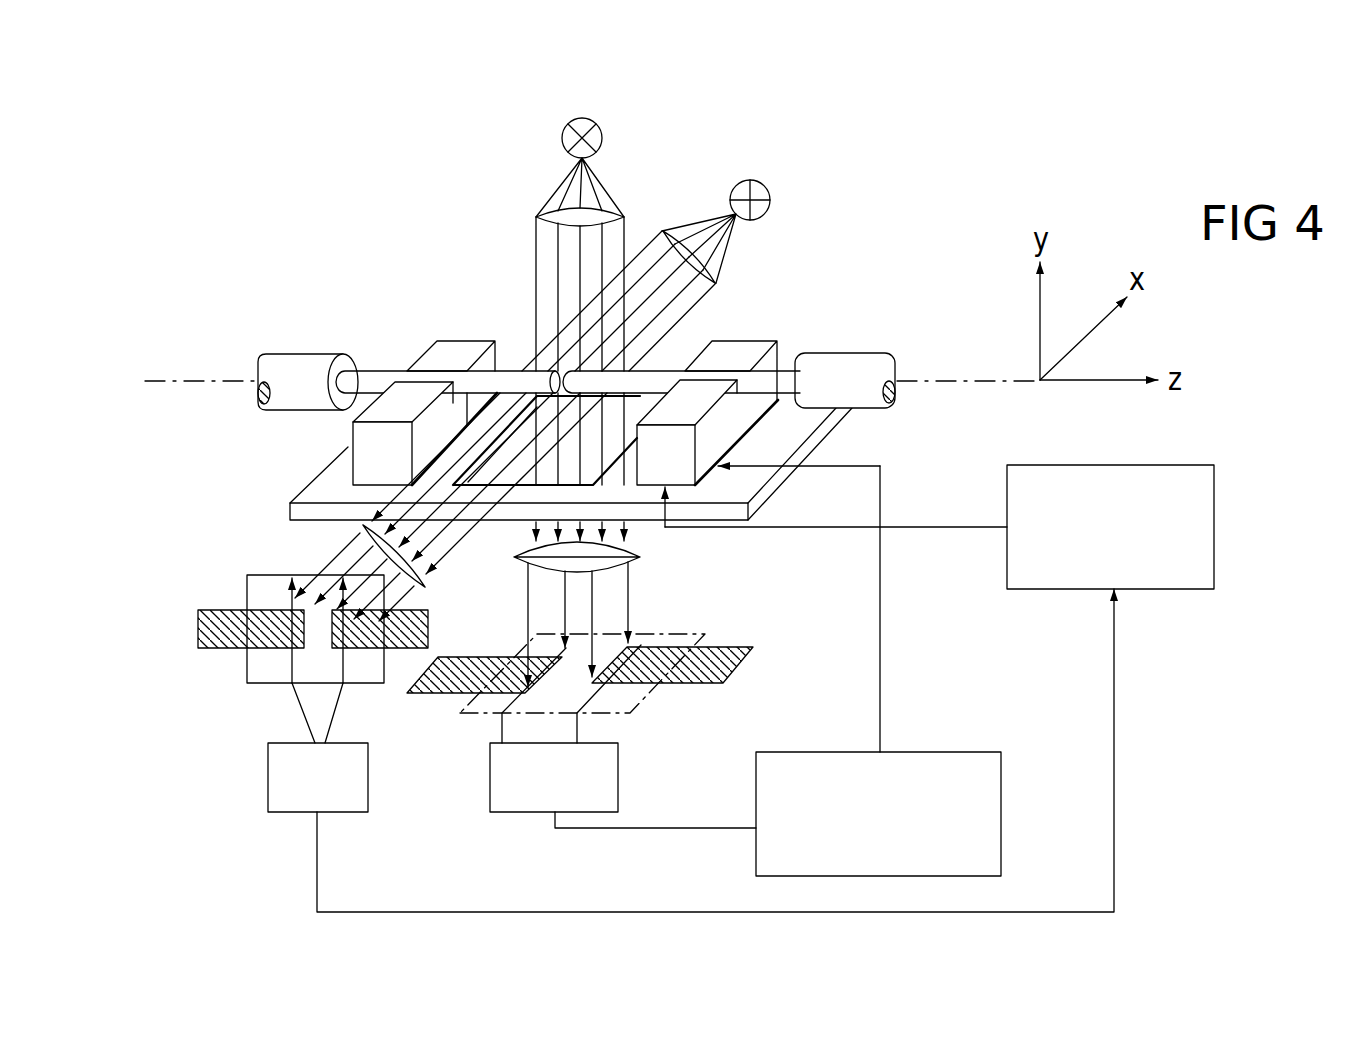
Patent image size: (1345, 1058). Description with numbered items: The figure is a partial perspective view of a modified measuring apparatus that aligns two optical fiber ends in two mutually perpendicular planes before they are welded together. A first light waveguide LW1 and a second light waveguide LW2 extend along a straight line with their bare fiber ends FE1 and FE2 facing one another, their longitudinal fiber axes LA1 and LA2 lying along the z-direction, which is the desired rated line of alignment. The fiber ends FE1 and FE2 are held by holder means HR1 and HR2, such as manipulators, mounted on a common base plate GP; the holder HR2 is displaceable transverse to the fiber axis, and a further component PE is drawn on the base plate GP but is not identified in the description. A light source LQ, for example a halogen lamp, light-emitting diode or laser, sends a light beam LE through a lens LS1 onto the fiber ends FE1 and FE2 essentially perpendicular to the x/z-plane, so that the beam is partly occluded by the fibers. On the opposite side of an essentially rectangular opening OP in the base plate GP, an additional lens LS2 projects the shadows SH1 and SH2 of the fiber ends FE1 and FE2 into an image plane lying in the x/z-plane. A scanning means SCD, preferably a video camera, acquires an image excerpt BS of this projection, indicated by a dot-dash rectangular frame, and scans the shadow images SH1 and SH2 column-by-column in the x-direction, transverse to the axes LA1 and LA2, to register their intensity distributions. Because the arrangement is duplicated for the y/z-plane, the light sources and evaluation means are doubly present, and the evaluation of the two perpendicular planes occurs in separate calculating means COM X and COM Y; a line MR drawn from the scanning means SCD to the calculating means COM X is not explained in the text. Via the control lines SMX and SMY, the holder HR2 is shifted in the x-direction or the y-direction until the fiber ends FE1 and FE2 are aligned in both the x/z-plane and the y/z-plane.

The longitudinal fiber axis LA1 is at (200, 378).
The longitudinal fiber axis LA2 is at (960, 380).
The first light waveguide LW1 is at (300, 363).
The second light waveguide LW2 is at (843, 363).
The holder means HR1 is at (435, 357).
The holder means HR2 is at (765, 343).
The fiber end FE1 is at (518, 376).
The fiber end FE2 is at (662, 380).
The piezoelectric element PE is at (333, 448).
The base plate GP is at (313, 493).
The opening OP is at (527, 478).
The light source LQ is at (562, 138).
The lens LS1 is at (540, 214).
The light beam LE is at (562, 254).
The additional lens LS2 is at (608, 563).
The shadow image SH1 is at (432, 690).
The shadow image SH2 is at (738, 646).
The image excerpt BS is at (633, 700).
The scanning means SCD is at (515, 803).
The calculating means COM X is at (878, 814).
The calculating means COM Y is at (1110, 527).
The control line SMX is at (880, 490).
The control line SMY is at (919, 527).
The measurement signal line MR is at (698, 828).